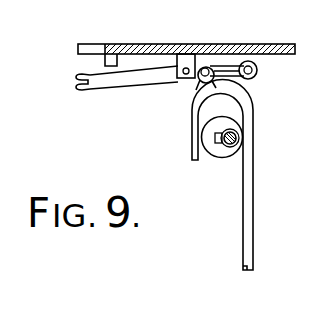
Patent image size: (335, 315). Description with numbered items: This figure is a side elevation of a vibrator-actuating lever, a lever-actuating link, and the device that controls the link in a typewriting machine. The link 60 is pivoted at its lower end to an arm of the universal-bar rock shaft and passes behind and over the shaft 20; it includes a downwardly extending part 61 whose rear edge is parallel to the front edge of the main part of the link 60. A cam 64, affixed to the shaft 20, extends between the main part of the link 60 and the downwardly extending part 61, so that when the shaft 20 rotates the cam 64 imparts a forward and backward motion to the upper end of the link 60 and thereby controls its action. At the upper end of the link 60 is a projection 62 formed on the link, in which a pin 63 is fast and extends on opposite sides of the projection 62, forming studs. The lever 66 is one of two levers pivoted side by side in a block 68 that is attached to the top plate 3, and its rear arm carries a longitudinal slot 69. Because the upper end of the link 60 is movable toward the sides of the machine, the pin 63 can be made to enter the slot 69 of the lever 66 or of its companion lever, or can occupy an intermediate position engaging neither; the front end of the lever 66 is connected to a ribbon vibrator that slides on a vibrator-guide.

The top plate 3 is at (111, 58).
The lever 66 is at (105, 82).
The block 68 is at (184, 54).
The pin 63 is at (207, 66).
The longitudinal slot 69 is at (243, 73).
The projection 62 is at (207, 82).
The downwardly extending part 61 is at (193, 123).
The link 60 is at (249, 184).
The cam 64 is at (207, 150).
The shaft 20 is at (230, 146).